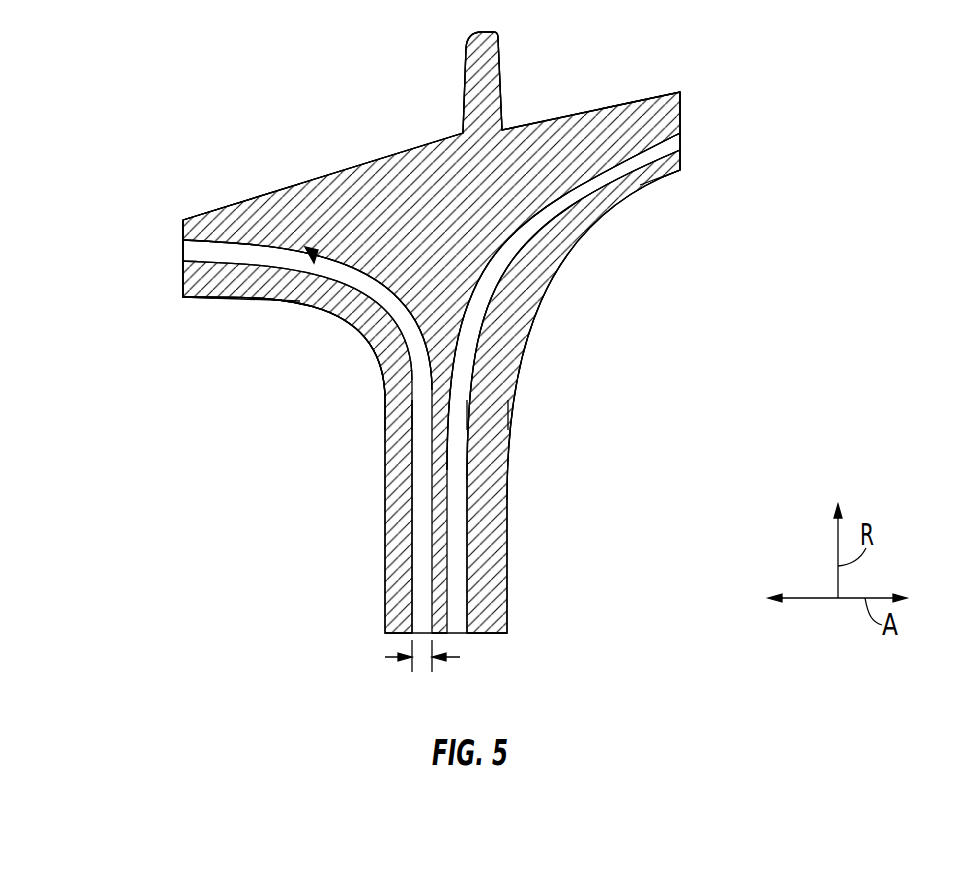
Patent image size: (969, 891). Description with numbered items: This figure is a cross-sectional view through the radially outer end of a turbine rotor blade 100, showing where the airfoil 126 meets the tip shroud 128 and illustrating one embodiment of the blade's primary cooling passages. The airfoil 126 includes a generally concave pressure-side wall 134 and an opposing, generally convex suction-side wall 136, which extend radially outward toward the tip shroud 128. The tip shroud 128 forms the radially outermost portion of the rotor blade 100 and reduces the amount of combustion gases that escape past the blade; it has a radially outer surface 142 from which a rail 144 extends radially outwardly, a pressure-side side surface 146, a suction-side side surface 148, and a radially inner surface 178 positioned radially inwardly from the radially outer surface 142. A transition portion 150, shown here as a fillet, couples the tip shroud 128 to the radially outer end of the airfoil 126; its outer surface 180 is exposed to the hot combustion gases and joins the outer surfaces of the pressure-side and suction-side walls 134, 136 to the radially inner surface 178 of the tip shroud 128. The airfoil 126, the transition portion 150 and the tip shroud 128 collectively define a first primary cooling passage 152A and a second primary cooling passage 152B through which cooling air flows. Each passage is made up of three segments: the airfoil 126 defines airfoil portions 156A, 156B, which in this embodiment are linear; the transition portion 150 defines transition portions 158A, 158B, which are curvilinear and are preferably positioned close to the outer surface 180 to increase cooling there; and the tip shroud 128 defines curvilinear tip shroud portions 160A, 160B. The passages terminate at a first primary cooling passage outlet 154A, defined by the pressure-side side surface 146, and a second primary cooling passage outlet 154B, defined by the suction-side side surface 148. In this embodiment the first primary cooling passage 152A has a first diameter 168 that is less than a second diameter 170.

The rotor blade 100 is at (86, 108).
The airfoil 126 is at (337, 620).
The tip shroud 128 is at (220, 174).
The pressure-side wall 134 is at (383, 487).
The suction-side wall 136 is at (508, 487).
The radially outer surface 142 is at (397, 157).
The rail 144 is at (500, 52).
The pressure-side side surface 146 is at (183, 283).
The suction-side side surface 148 is at (681, 113).
The transition portion 150 is at (328, 303).
The first primary cooling passage 152A is at (411, 415).
The second primary cooling passage 152B is at (470, 412).
The first primary cooling passage outlet 154A is at (183, 250).
The second primary cooling passage outlet 154B is at (681, 144).
The airfoil portion of the first primary cooling passage 156A is at (413, 548).
The airfoil portion of the second primary cooling passage 156B is at (458, 512).
The transition portion of the first primary cooling passage 158A is at (325, 308).
The transition portion of the second primary cooling passage 158B is at (555, 263).
The tip shroud portion of the first primary cooling passage 160A is at (257, 250).
The tip shroud portion of the second primary cooling passage 160B is at (633, 160).
The first diameter 168 is at (390, 657).
The second diameter 170 is at (311, 250).
The radially inner surface 178 is at (199, 292).
The outer surface 180 is at (388, 307).